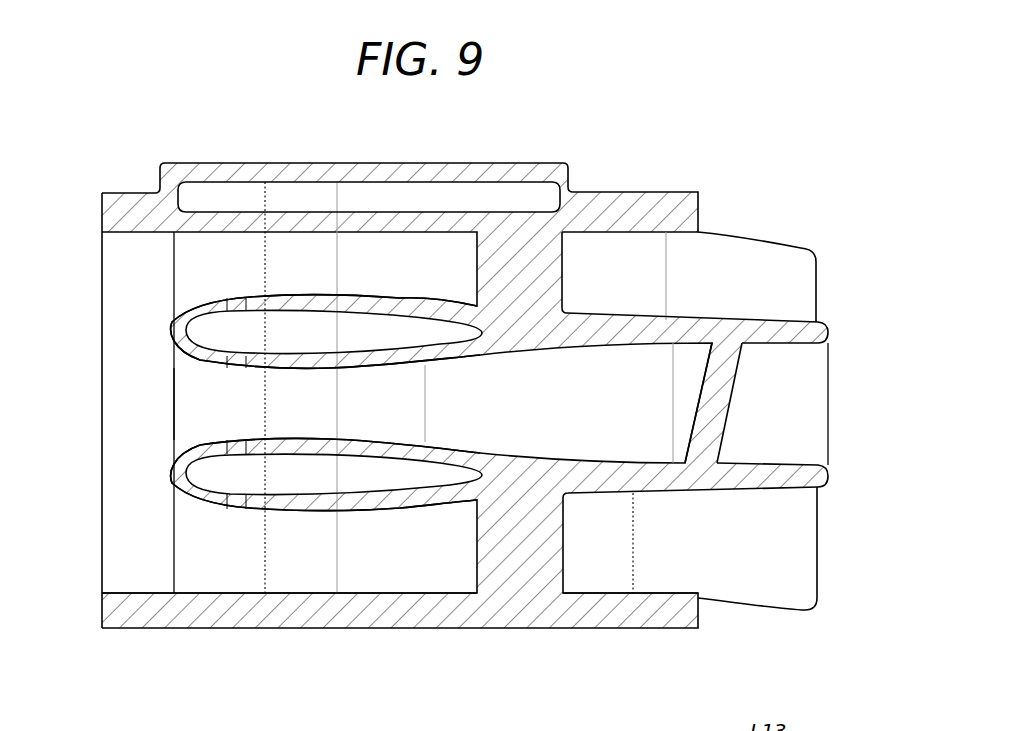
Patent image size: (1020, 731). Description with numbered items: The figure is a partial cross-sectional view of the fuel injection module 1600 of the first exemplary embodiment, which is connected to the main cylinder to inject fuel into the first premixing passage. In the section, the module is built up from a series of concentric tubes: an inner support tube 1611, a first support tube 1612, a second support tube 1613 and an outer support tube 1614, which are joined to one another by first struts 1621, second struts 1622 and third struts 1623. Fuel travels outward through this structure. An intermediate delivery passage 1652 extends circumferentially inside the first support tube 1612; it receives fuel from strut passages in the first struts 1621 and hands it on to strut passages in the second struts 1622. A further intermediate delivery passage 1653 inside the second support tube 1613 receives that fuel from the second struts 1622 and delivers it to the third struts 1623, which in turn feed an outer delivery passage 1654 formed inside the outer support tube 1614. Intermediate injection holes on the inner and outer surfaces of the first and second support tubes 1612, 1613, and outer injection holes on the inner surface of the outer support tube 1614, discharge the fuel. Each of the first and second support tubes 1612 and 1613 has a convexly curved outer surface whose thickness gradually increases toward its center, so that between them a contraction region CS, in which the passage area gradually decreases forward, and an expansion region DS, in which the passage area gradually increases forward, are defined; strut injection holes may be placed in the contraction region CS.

The fuel injection module 1600 is at (800, 182).
The inner support tube 1611 is at (637, 604).
The first support tube 1612 is at (800, 470).
The second support tube 1613 is at (800, 330).
The outer support tube 1614 is at (640, 200).
The first struts 1621 is at (800, 560).
The second struts 1622 is at (800, 410).
The third struts 1623 is at (752, 262).
The intermediate delivery passage 1652 is at (210, 478).
The intermediate delivery passage 1653 is at (210, 333).
The outer delivery passage 1654 is at (397, 195).
The contraction region CS is at (231, 395).
The expansion region DS is at (619, 395).